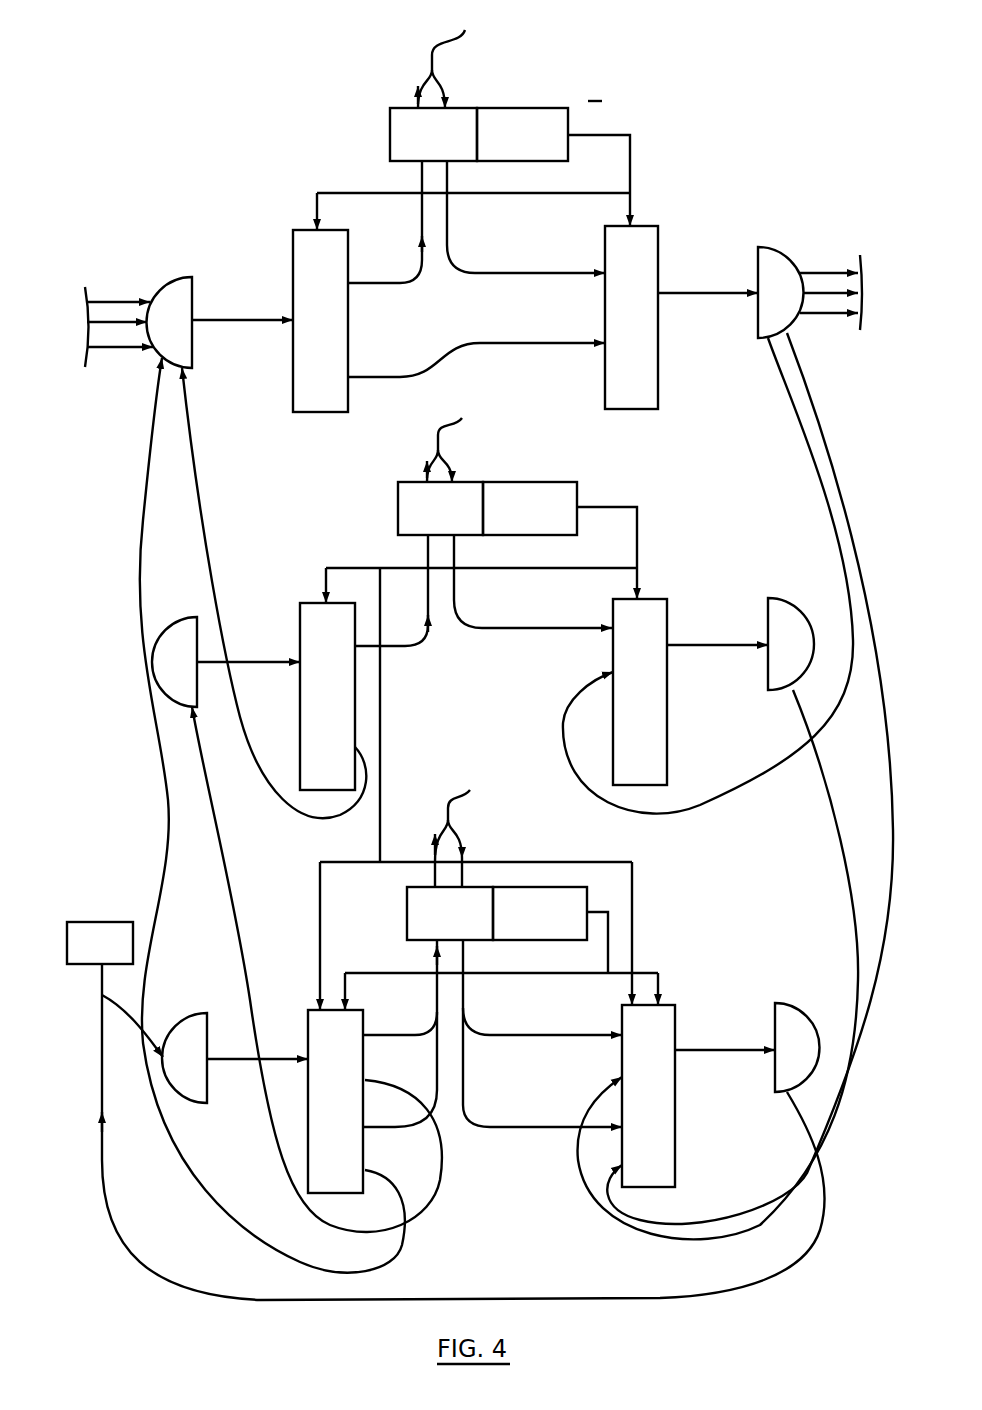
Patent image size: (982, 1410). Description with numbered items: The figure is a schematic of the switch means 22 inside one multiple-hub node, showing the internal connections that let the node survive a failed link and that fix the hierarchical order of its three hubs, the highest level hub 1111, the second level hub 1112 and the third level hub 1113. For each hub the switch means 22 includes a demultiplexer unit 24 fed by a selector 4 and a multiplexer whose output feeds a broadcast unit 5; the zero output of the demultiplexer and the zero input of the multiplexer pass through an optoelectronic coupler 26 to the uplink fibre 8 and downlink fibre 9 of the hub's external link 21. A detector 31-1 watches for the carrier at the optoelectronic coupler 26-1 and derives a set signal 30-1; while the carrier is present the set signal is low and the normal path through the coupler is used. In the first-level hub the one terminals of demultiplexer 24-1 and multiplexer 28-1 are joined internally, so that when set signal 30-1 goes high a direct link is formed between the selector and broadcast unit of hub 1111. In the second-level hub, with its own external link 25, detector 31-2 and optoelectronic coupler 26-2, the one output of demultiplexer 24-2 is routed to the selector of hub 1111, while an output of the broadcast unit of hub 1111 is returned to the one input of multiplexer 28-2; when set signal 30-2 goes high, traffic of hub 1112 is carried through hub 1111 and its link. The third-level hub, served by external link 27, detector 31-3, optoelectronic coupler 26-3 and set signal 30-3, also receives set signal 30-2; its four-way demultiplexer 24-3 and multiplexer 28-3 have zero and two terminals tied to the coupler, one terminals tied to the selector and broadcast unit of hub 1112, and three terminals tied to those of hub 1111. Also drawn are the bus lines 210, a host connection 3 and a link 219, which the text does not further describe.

The external link 21 is at (459, 37).
The uplink fibre 8 is at (413, 97).
The downlink fibre 9 is at (448, 92).
The detector 31-1 is at (533, 118).
The optoelectronic coupler 26-1 is at (398, 146).
The set signal 30-1 is at (630, 165).
The switch means 22 is at (218, 172).
The highest level hub 1111 is at (732, 182).
The second level hub 1112 is at (713, 540).
The third level hub 1113 is at (727, 878).
The selector 4 is at (190, 293).
The broadcast unit 5 is at (781, 292).
The data bus line 210 is at (115, 302).
The optoelectronic coupler 26 is at (98, 320).
The demultiplexer unit 24 is at (105, 350).
The demultiplexer 24-1 is at (317, 407).
The multiplexer 28-1 is at (641, 406).
The external link 25 is at (454, 439).
The detector 31-2 is at (527, 492).
The optoelectronic coupler 26-2 is at (407, 515).
The set signal 30-2 is at (645, 508).
The demultiplexer 24-2 is at (345, 708).
The multiplexer 28-2 is at (660, 742).
The external link 27 is at (464, 828).
The detector 31-3 is at (553, 922).
The optoelectronic coupler 26-3 is at (417, 912).
The set signal 30-3 is at (610, 948).
The demultiplexer 24-3 is at (312, 1157).
The multiplexer 28-3 is at (667, 1188).
The host computer 3 is at (100, 921).
The host connection line 219 is at (102, 1013).